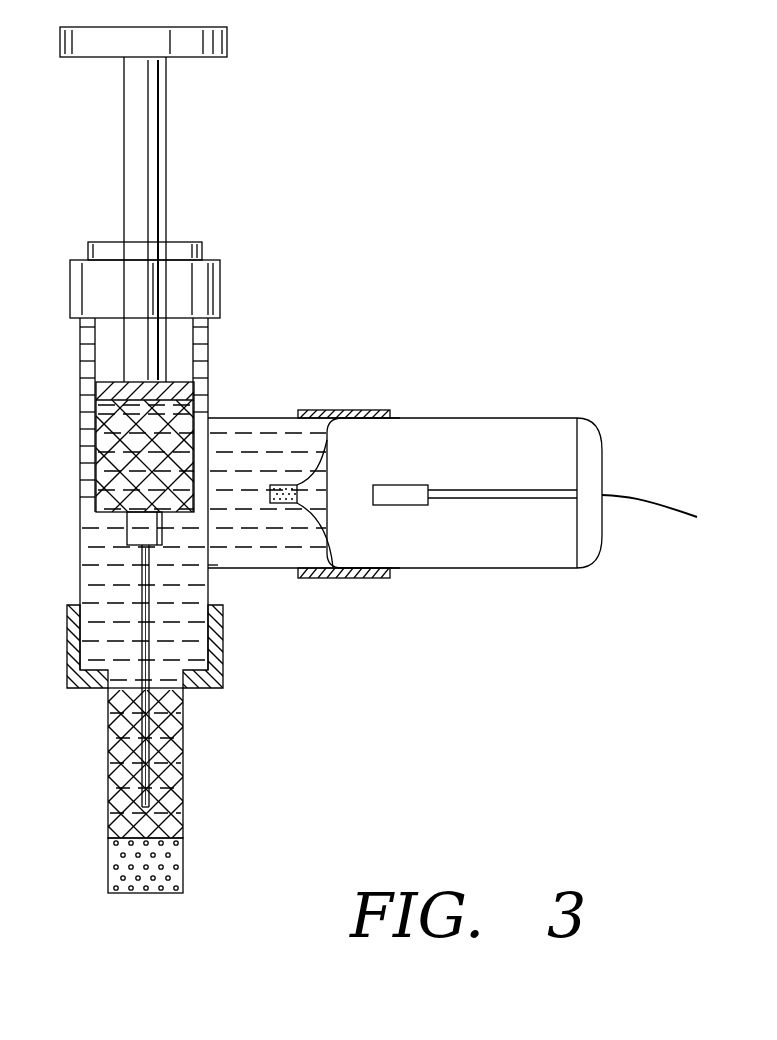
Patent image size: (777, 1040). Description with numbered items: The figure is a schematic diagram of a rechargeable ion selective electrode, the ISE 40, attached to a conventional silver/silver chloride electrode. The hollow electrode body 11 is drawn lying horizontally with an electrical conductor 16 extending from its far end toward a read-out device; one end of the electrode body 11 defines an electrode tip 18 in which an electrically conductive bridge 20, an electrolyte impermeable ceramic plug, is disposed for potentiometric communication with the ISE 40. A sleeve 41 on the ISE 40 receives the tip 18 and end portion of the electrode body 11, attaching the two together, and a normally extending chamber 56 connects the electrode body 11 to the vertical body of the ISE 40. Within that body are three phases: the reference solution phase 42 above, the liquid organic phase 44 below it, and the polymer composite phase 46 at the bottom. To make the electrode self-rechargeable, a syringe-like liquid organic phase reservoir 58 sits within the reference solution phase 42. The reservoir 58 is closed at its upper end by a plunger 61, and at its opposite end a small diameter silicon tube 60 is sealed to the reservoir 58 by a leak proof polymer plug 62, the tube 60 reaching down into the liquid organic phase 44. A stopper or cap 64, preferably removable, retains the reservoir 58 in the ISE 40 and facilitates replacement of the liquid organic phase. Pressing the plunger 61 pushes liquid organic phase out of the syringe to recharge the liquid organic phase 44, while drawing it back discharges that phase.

The electrode body 11 is at (512, 420).
The electrical conductor 16 is at (643, 495).
The electrode tip 18 is at (273, 503).
The electrically conductive bridge 20 is at (297, 495).
The ion selective electrode 40 is at (160, 795).
The sleeve 41 is at (363, 410).
The reference solution phase 42 is at (88, 523).
The liquid organic phase 44 is at (177, 763).
The polymer composite phase 46 is at (171, 870).
The normally extending chamber 56 is at (228, 418).
The liquid organic phase reservoir 58 is at (100, 417).
The silicon tube 60 is at (143, 617).
The plunger 61 is at (166, 165).
The polymer plug 62 is at (127, 535).
The stopper or cap 64 is at (220, 297).